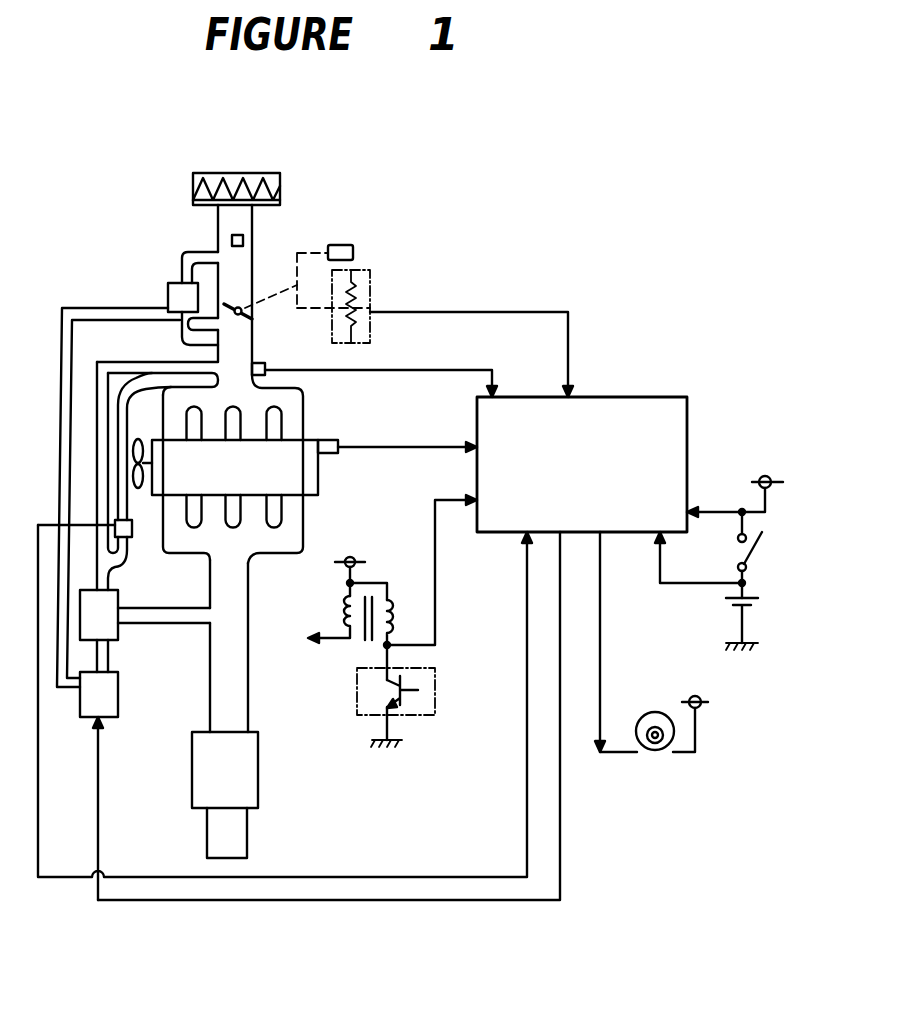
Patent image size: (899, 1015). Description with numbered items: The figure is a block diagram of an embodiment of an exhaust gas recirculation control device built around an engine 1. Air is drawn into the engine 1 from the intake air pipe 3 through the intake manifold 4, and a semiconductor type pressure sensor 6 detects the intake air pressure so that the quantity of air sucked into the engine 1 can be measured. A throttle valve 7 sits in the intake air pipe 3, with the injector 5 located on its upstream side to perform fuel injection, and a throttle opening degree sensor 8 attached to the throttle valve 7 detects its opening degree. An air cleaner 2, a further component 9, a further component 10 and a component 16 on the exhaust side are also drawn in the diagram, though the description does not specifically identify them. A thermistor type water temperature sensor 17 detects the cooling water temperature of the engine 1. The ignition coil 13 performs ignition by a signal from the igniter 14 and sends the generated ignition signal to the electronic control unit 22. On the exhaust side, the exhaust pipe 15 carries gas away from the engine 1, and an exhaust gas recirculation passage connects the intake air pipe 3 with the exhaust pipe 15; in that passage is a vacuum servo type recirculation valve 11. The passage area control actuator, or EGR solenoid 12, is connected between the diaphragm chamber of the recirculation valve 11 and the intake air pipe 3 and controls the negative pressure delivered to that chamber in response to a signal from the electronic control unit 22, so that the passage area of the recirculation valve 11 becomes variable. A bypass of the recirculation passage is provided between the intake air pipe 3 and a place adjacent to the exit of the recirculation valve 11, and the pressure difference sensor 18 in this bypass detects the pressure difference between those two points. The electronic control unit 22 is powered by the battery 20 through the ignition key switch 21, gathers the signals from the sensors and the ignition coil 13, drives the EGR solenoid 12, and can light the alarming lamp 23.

The engine 1 is at (318, 482).
The air cleaner 2 is at (193, 178).
The intake air pipe 3 is at (218, 232).
The intake manifold 4 is at (303, 395).
The injector 5 is at (243, 240).
The pressure sensor 6 is at (265, 367).
The throttle valve 7 is at (248, 318).
The throttle opening degree sensor 8 is at (370, 272).
The idle switch 9 is at (353, 250).
The idle speed control valve 10 is at (168, 290).
The recirculation valve 11 is at (118, 633).
The passage area control actuator (EGR solenoid) 12 is at (118, 705).
The ignition coil 13 is at (343, 613).
The igniter 14 is at (435, 690).
The exhaust pipe 15 is at (248, 692).
The catalytic converter 16 is at (258, 770).
The water temperature sensor 17 is at (335, 440).
The pressure difference sensor 18 is at (132, 537).
The battery 20 is at (730, 606).
The ignition key switch 21 is at (735, 548).
The electronic control unit 22 is at (633, 397).
The alarming lamp 23 is at (650, 750).